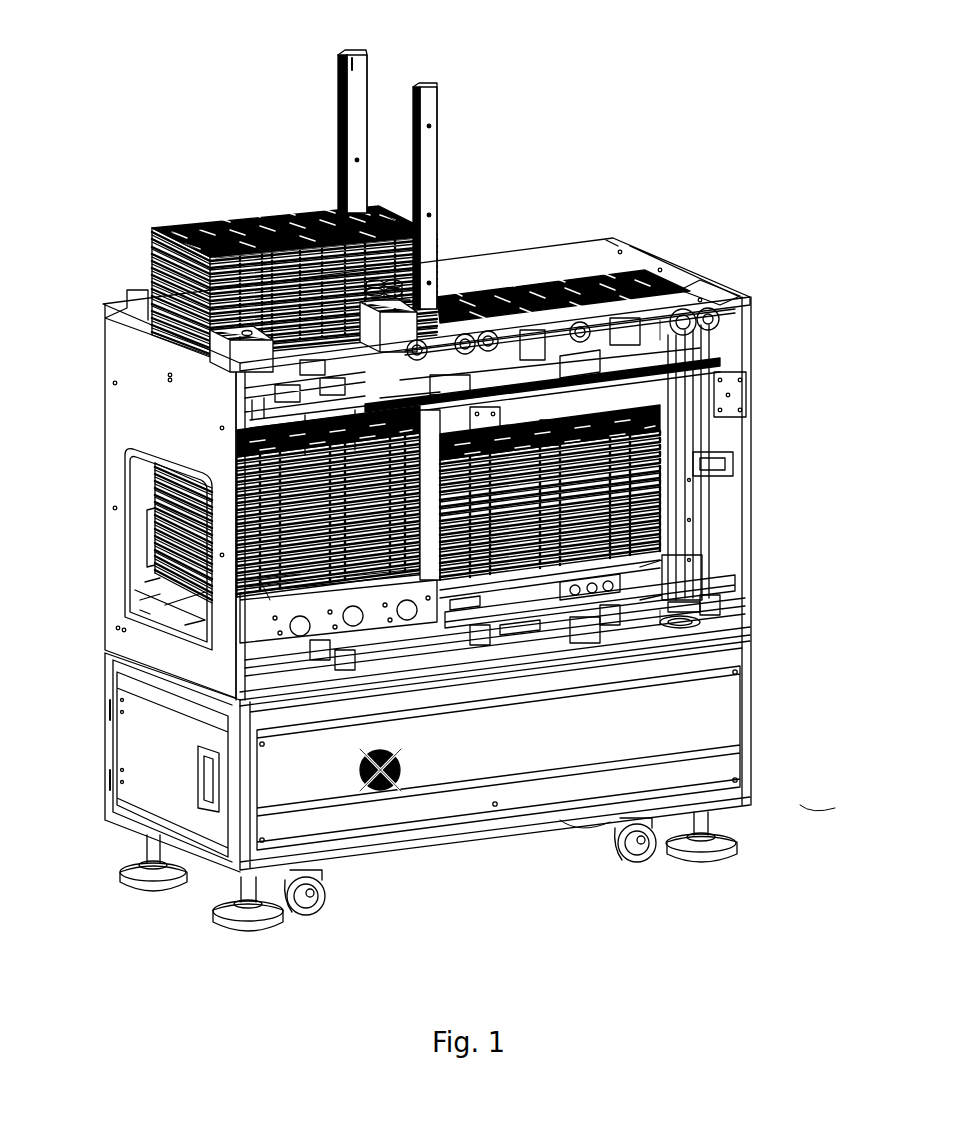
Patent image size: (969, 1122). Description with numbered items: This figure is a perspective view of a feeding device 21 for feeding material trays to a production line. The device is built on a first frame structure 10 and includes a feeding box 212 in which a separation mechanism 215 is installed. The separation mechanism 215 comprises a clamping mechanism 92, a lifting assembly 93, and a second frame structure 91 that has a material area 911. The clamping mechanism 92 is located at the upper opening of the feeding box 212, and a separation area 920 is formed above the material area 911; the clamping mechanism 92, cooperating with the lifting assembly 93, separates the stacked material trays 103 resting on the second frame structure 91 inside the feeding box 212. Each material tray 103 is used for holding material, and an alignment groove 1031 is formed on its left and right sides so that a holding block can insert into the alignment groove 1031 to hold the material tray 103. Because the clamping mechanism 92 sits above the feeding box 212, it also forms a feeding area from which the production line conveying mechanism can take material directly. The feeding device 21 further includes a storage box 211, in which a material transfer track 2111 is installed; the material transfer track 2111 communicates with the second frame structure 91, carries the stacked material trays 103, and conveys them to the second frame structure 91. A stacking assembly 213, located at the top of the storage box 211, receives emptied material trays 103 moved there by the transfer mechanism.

The feeding device 21 is at (96, 33).
The first frame structure 10 is at (148, 431).
The material tray 103 is at (302, 207).
The alignment groove 1031 is at (222, 218).
The stacking assembly 213 is at (150, 232).
The storage box 211 is at (240, 507).
The feeding box 212 is at (348, 572).
The material transfer track 2111 is at (470, 610).
The separation area 920 is at (633, 270).
The clamping mechanism 92 is at (743, 370).
The material area 911 is at (700, 440).
The lifting assembly 93 is at (688, 525).
The second frame structure 91 is at (680, 572).
The separation mechanism 215 is at (840, 395).